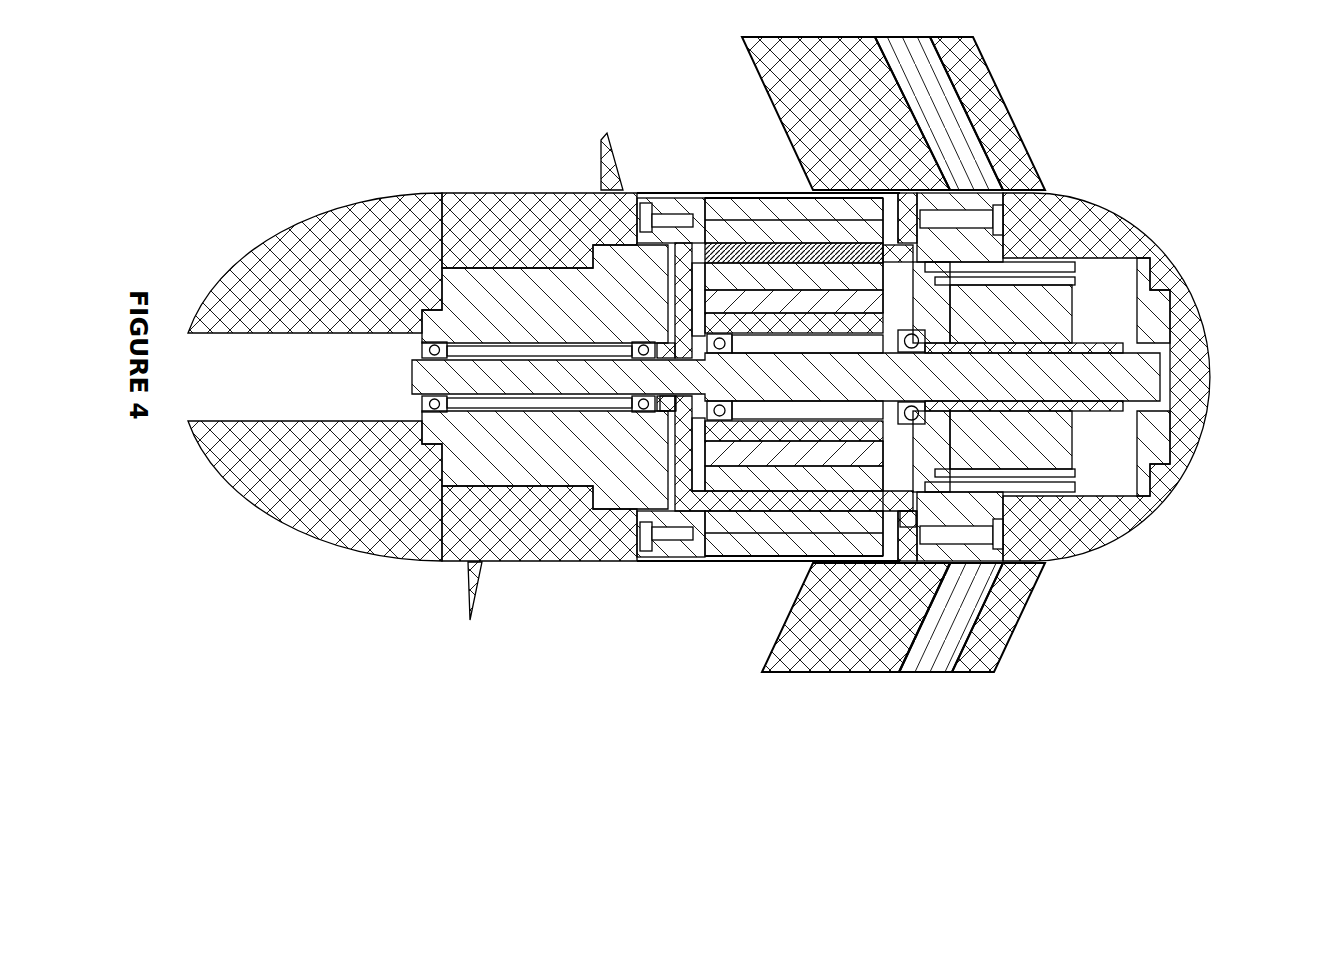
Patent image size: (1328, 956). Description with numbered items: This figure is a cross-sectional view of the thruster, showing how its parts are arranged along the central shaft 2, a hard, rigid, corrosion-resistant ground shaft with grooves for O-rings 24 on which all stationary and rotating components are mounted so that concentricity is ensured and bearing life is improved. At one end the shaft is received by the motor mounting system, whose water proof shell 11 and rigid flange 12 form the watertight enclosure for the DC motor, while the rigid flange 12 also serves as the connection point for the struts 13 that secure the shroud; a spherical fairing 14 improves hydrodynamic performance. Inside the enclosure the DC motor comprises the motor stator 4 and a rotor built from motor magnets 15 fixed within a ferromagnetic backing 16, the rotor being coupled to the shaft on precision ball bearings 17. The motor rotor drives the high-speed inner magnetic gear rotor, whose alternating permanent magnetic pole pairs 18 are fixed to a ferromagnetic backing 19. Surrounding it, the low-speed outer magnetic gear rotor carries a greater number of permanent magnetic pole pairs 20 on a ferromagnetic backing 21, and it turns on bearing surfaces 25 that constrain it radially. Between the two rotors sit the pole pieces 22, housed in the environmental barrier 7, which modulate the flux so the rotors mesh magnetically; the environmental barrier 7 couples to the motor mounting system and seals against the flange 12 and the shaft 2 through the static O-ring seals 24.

The central shaft 2 is at (1130, 373).
The motor stator 4 is at (1042, 313).
The environmental barrier 7 is at (680, 285).
The water proof shell 11 is at (1148, 445).
The rigid flange 12 is at (933, 517).
The struts 13 is at (965, 592).
The spherical fairing 14 is at (1185, 420).
The motor magnets 15 is at (1077, 279).
The ferromagnetic backing 16 is at (1062, 267).
The precision ball bearings 17 is at (908, 338).
The permanent magnetic pole pairs 18 is at (857, 277).
The ferromagnetic backing 19 is at (837, 302).
The permanent magnetic pole pairs 20 is at (755, 230).
The ferromagnetic backing 21 is at (687, 230).
The pole pieces 22 is at (683, 287).
The O-rings 24 is at (680, 395).
The bearing surfaces 25 is at (433, 402).